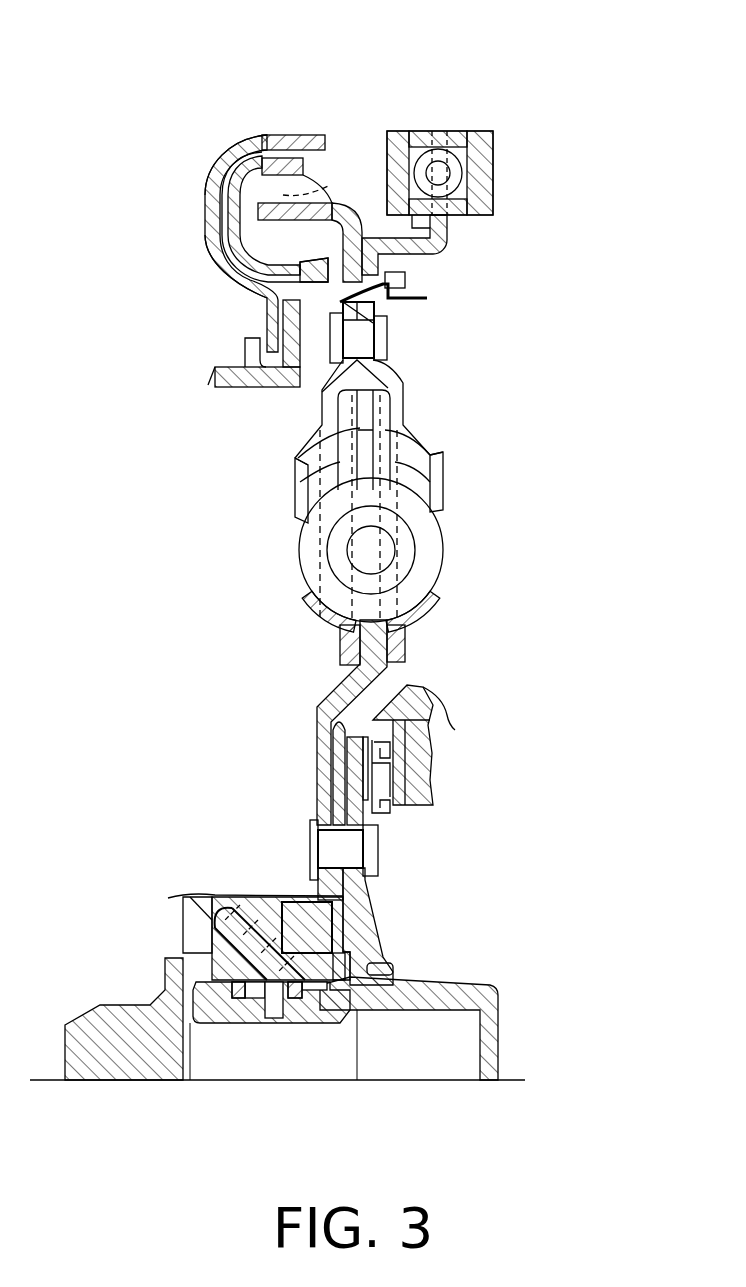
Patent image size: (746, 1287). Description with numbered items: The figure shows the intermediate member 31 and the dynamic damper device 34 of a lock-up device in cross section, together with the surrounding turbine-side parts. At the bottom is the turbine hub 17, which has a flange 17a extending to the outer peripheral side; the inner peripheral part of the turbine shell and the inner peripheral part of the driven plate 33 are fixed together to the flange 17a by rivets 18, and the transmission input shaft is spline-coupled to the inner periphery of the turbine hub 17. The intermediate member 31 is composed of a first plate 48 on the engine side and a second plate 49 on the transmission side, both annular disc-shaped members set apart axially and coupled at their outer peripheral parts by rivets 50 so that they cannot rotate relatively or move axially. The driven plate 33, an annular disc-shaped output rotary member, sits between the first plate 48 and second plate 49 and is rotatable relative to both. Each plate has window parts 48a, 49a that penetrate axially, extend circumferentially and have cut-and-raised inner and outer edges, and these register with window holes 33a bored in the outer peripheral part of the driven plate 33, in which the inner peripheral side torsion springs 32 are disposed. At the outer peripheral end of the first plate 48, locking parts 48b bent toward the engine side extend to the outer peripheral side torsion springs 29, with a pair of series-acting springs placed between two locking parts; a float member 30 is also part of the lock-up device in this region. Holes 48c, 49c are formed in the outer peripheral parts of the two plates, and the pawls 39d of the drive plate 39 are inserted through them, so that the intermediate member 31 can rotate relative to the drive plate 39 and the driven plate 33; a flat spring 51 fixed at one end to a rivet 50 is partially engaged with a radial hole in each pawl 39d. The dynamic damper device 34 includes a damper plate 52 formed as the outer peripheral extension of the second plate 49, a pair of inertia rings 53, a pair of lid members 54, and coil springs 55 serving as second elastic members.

The turbine hub 17 is at (503, 1002).
The flange 17a is at (358, 912).
The rivets 18 is at (372, 854).
The outer peripheral side torsion springs 29 is at (323, 178).
The float member 30 is at (217, 166).
The intermediate member 31 is at (450, 260).
The inner peripheral side torsion springs 32 is at (440, 534).
The driven plate 33 is at (316, 757).
The window holes 33a is at (443, 456).
The dynamic damper device 34 is at (500, 119).
The drive plate 39 is at (223, 365).
The pawls 39d is at (405, 275).
The first plate 48 is at (310, 407).
The window parts 48a is at (300, 490).
The locking parts 48b is at (270, 205).
The holes 48c is at (245, 290).
The second plate 49 is at (434, 434).
The window parts 49a is at (443, 494).
The holes 49c is at (395, 302).
The rivets 50 is at (382, 340).
The flat spring 51 is at (240, 250).
The damper plate 52 is at (438, 130).
The inertia rings 53 is at (420, 130).
The lid members 54 is at (398, 130).
The coil springs 55 is at (457, 177).